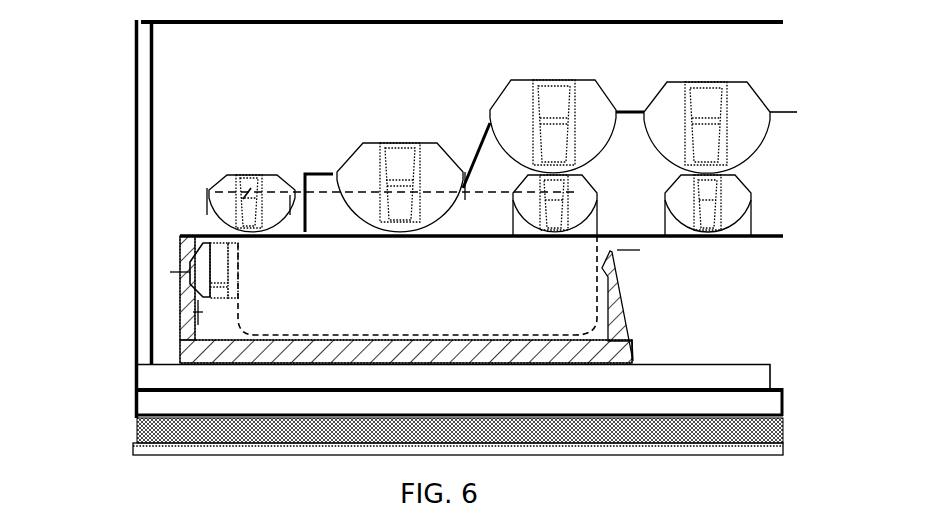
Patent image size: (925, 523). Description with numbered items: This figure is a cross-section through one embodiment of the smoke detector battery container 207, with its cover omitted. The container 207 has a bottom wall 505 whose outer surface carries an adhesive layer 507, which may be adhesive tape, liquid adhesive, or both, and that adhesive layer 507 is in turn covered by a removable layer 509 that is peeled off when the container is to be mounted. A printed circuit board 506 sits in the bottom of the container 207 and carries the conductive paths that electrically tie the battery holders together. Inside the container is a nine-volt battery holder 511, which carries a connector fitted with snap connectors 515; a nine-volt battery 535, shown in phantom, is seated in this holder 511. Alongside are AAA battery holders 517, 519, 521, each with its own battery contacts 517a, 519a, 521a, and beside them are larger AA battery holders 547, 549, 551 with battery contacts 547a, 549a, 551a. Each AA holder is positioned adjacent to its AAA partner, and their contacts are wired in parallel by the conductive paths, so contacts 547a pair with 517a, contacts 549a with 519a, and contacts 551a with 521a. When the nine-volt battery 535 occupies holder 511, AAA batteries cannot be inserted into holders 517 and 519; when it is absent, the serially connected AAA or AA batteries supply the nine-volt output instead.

The smoke detector battery container 207 is at (96, 238).
The bottom wall 505 is at (193, 405).
The printed circuit board 506 is at (766, 373).
The adhesive layer 507 is at (175, 431).
The removable layer 509 is at (183, 451).
The 9-volt battery holder 511 is at (646, 311).
The snap connectors 515 is at (212, 264).
The AAA battery holder 517 is at (265, 183).
The battery contacts 517a is at (240, 215).
The AAA battery holder 519 is at (526, 181).
The battery contacts 519a is at (550, 202).
The AAA battery holder 521 is at (732, 192).
The battery contacts 521a is at (710, 217).
The 9-volt battery 535 is at (461, 293).
The AA battery holder 547 is at (363, 145).
The battery contacts 547a is at (380, 183).
The AA battery holder 549 is at (522, 112).
The battery contacts 549a is at (535, 138).
The AA battery holder 551 is at (750, 103).
The battery contacts 551a is at (695, 112).